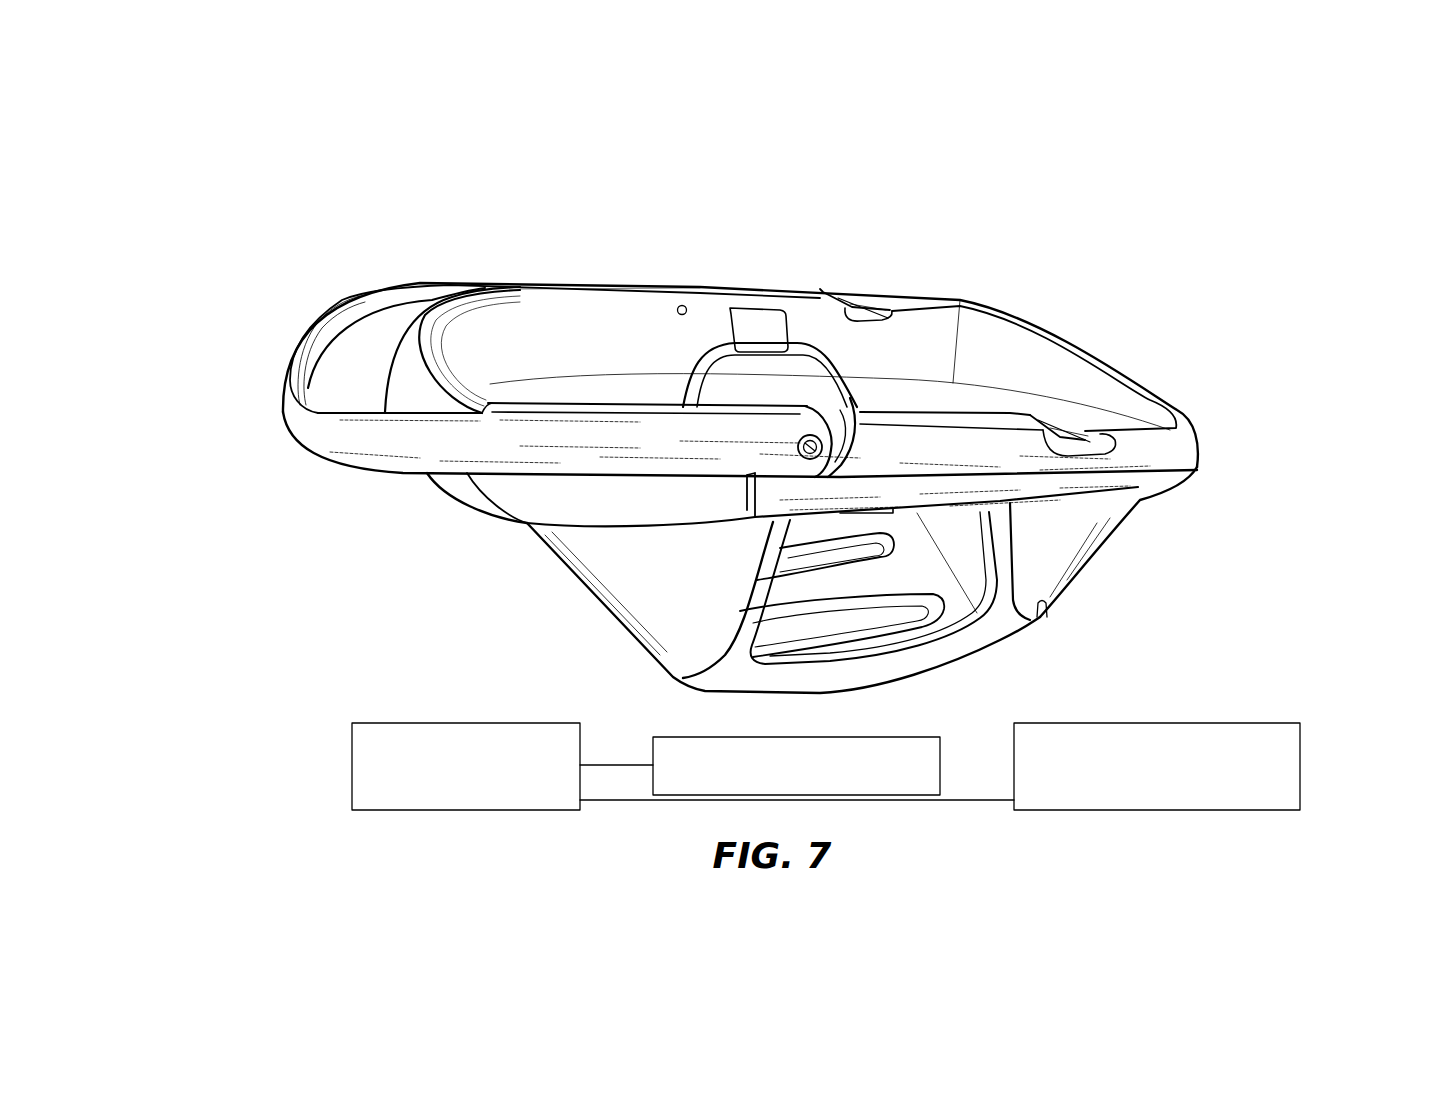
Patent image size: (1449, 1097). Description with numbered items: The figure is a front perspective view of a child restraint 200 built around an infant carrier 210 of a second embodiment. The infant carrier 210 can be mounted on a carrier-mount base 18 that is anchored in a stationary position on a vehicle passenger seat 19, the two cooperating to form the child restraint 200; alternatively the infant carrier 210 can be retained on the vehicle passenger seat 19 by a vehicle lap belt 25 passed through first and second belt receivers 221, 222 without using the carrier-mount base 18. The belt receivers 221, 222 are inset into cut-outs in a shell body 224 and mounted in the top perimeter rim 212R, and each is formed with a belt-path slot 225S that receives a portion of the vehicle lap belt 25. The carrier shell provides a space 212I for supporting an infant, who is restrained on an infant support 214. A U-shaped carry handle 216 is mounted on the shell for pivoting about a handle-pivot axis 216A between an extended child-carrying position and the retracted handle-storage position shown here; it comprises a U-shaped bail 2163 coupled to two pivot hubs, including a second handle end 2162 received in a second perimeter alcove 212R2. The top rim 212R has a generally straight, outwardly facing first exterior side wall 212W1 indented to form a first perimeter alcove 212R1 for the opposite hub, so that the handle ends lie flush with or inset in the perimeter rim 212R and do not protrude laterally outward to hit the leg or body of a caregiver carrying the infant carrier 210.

The child restraint 200 is at (1140, 181).
The infant carrier 210 is at (1105, 256).
The top perimeter rim 212R is at (150, 338).
The first perimeter alcove 212R1 is at (627, 322).
The second perimeter alcove 212R2 is at (742, 487).
The space for supporting an infant 212I is at (1000, 357).
The first exterior side wall 212W1 is at (1345, 459).
The infant support 214 is at (548, 338).
The carry handle 216 is at (309, 308).
The U-shaped bail 2163 is at (390, 279).
The second handle end 2162 is at (840, 432).
The handle-pivot axis 216A is at (863, 506).
The first belt receiver 221 is at (860, 286).
The second belt receiver 222 is at (1073, 418).
The belt-path slot 225S is at (880, 306).
The shell body 224 is at (1003, 632).
The carrier-mount base 18 is at (873, 737).
The vehicle passenger seat 19 is at (465, 723).
The vehicle lap belt 25 is at (1128, 462).